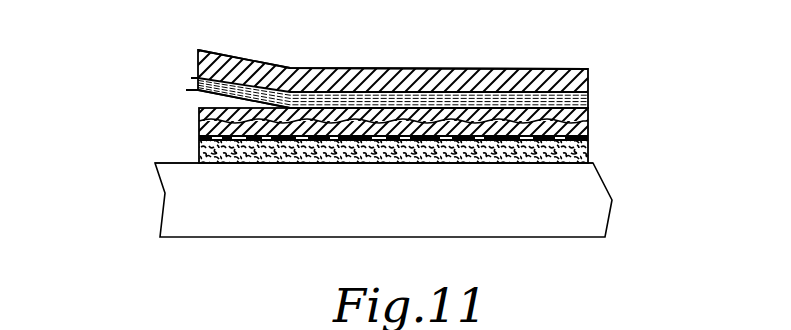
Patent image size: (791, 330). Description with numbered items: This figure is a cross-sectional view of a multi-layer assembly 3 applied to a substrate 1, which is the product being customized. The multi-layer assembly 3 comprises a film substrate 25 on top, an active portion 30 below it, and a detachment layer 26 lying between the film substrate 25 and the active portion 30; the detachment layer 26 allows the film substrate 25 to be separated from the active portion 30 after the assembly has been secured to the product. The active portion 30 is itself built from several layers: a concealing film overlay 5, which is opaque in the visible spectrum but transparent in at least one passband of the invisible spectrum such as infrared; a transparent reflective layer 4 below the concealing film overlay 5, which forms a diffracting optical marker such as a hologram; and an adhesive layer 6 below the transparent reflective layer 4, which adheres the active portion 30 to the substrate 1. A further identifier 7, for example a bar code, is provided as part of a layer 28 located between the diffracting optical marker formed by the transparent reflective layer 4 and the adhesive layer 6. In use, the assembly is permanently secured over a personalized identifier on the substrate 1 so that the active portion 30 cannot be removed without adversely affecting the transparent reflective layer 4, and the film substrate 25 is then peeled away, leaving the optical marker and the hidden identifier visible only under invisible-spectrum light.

The substrate 1 is at (557, 222).
The multi-layer assembly 3 is at (528, 53).
The transparent reflective layer 4 is at (199, 127).
The concealing film overlay 5 is at (588, 127).
The adhesive layer 6 is at (588, 153).
The further identifier 7 is at (465, 143).
The film substrate 25 is at (588, 80).
The detachment layer 26 is at (197, 88).
The layer 28 is at (199, 143).
The active portion 30 is at (297, 169).